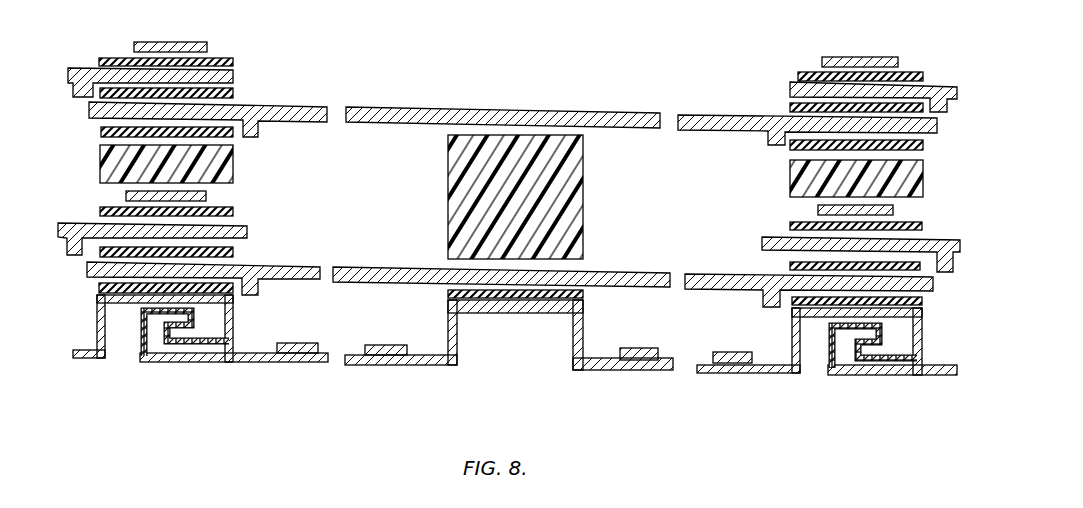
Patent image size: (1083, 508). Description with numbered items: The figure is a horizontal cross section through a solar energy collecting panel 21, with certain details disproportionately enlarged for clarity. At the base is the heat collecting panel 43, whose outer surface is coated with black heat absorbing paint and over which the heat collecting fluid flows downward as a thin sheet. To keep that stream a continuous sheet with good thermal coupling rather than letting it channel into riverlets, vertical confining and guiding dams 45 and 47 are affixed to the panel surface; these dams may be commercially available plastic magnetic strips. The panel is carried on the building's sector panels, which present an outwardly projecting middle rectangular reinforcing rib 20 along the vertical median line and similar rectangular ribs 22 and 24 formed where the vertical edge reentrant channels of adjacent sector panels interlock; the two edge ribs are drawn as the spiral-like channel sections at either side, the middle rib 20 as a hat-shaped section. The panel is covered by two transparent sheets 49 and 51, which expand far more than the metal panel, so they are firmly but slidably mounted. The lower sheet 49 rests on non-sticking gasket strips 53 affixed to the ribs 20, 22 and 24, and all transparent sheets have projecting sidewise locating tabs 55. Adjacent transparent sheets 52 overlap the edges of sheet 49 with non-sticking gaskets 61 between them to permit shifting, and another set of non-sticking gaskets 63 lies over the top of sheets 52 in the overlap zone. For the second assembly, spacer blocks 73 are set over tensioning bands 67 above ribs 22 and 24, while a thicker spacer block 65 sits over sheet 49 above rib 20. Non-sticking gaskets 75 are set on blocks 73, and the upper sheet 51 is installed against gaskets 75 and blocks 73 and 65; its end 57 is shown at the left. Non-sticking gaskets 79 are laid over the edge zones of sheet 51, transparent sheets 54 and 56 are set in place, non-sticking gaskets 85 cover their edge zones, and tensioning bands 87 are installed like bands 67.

The middle rectangular reinforcing rib 20 is at (463, 323).
The solar energy collecting panel 21 is at (529, 100).
The rectangular rib 22 is at (107, 327).
The rectangular rib 24 is at (800, 347).
The panel 43 is at (425, 355).
The confining and guiding dam 45 is at (297, 343).
The confining and guiding dam 47 is at (375, 345).
The transparent sheet 49 is at (378, 268).
The transparent sheet 51 is at (590, 110).
The transparent sheet 52 is at (247, 231).
The non-sticking gasket strip 53 is at (99, 290).
The transparent sheet 54 is at (91, 68).
The locating tab 55 is at (258, 132).
The transparent sheet 56 is at (790, 88).
The plate end 57 is at (350, 108).
The non-sticking gasket 61 is at (233, 252).
The non-sticking gasket 63 is at (103, 210).
The spacer block 65 is at (448, 180).
The tensioning band 67 is at (206, 196).
The spacer block 73 is at (233, 165).
The non-sticking gasket 75 is at (101, 132).
The non-sticking gasket 79 is at (233, 93).
The non-sticking gasket 85 is at (233, 62).
The tensioning band 87 is at (200, 42).